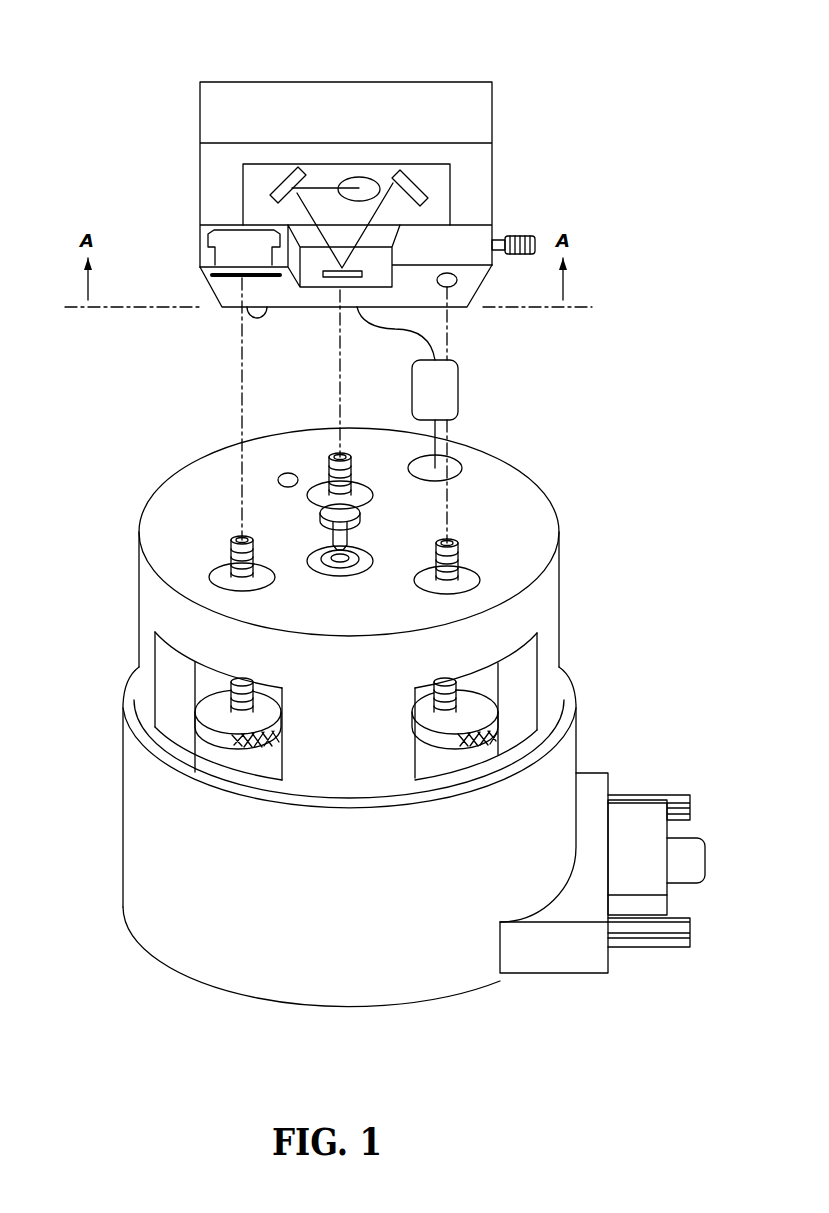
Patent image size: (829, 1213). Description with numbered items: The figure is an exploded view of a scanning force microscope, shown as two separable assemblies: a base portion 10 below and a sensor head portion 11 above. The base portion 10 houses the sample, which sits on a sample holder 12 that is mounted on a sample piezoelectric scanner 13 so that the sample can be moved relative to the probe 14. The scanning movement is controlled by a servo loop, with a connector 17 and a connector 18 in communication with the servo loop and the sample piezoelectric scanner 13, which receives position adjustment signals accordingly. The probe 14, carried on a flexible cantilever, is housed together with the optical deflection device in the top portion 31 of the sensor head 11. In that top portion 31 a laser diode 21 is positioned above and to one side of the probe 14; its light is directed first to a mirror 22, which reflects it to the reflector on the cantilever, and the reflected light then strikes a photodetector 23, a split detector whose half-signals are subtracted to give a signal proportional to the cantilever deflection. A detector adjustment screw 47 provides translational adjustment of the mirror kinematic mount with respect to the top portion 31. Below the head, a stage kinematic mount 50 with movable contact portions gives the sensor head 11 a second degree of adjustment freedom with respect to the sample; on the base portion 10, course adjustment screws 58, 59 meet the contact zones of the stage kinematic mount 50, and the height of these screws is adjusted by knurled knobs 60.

The base portion 10 is at (712, 410).
The sensor head portion 11 is at (654, 98).
The sample holder 12 is at (364, 519).
The sample piezoelectric scanner 13 is at (372, 550).
The probe 14 is at (320, 266).
The connector 17 is at (463, 388).
The connector 18 is at (673, 792).
The laser diode 21 is at (368, 172).
The mirror 22 is at (270, 176).
The photodetector 23 is at (430, 174).
The top portion 31 is at (505, 142).
The detector adjustment screw 47 is at (530, 227).
The stage kinematic mount 50 is at (208, 290).
The course adjustment screw 58 is at (220, 546).
The course adjustment screw 59 is at (324, 455).
The knurled knobs 60 is at (197, 727).